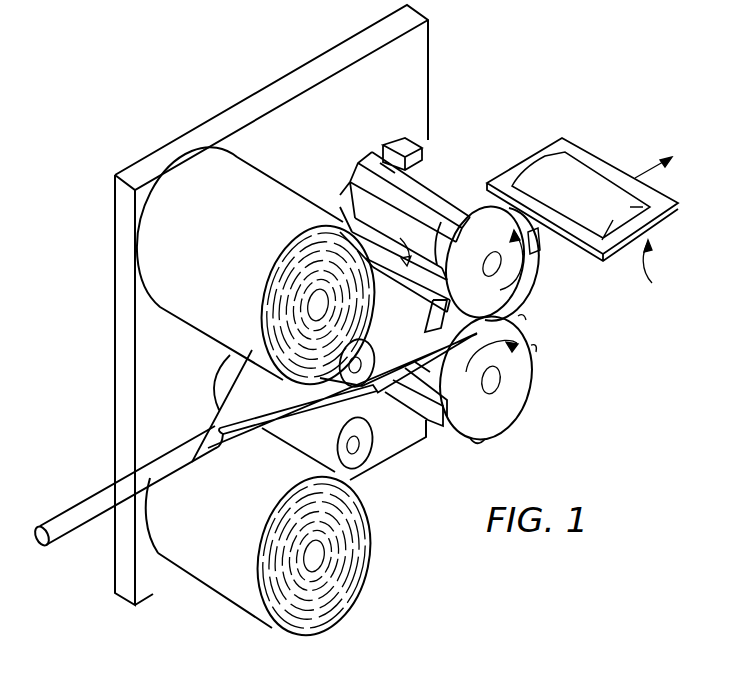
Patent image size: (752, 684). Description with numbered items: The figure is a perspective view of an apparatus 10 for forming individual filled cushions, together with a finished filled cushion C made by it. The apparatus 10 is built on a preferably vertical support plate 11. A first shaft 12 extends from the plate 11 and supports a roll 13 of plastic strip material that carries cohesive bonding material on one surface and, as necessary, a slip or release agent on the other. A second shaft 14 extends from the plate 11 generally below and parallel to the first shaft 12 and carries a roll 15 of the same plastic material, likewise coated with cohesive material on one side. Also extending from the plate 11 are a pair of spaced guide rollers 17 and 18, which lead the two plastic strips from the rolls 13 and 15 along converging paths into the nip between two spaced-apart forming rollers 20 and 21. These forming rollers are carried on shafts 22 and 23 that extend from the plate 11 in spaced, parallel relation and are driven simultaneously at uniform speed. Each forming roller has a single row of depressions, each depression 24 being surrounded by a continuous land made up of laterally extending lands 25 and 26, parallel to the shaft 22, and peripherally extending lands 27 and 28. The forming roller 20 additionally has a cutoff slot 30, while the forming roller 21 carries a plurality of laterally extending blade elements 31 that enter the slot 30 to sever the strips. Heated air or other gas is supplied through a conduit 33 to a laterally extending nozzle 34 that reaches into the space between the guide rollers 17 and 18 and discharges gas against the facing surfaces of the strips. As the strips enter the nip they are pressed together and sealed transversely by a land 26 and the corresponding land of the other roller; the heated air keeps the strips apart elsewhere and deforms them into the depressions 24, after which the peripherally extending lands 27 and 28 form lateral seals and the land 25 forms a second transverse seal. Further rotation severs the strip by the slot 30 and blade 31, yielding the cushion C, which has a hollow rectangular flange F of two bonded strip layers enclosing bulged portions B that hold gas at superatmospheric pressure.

The apparatus 10 is at (484, 62).
The support plate 11 is at (118, 285).
The first shaft 12 is at (320, 302).
The roll 13 is at (200, 298).
The second shaft 14 is at (318, 556).
The roll 15 is at (242, 583).
The guide roller 17 is at (366, 370).
The guide roller 18 is at (360, 452).
The forming roller 20 is at (495, 261).
The forming roller 21 is at (492, 393).
The shaft 22 is at (487, 276).
The shaft 23 is at (500, 382).
The depression 24 is at (390, 235).
The laterally extending land 25 is at (372, 152).
The laterally extending land 26 is at (404, 247).
The peripherally extending land 27 is at (356, 196).
The peripherally extending land 28 is at (465, 262).
The cutoff slot 30 is at (534, 248).
The blade element 31 is at (470, 450).
The conduit 33 is at (68, 506).
The nozzle 34 is at (236, 410).
The bulged portion B is at (558, 172).
The filled cushion C is at (654, 261).
The hollow rectangular flange F is at (661, 202).